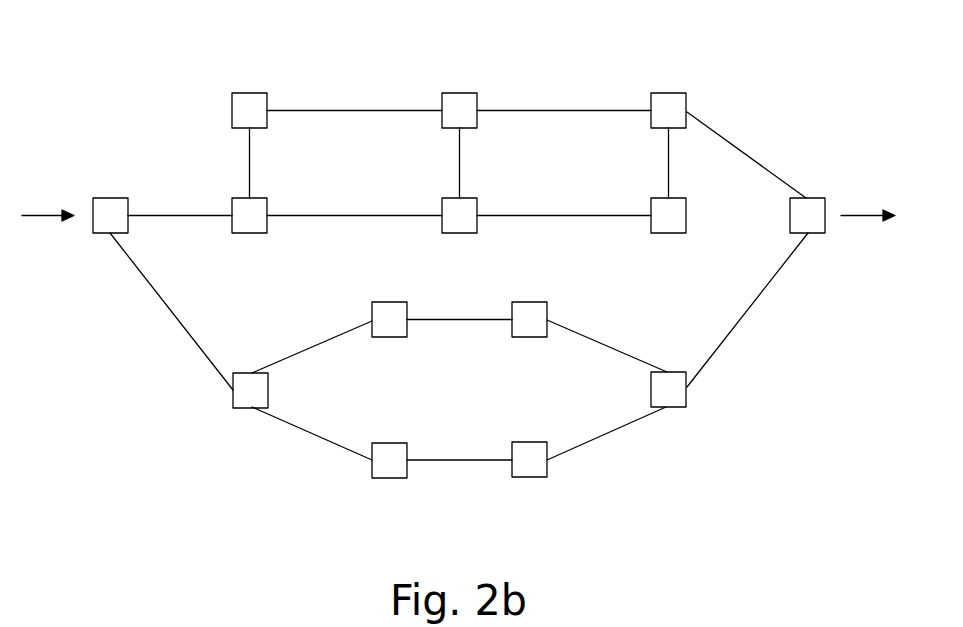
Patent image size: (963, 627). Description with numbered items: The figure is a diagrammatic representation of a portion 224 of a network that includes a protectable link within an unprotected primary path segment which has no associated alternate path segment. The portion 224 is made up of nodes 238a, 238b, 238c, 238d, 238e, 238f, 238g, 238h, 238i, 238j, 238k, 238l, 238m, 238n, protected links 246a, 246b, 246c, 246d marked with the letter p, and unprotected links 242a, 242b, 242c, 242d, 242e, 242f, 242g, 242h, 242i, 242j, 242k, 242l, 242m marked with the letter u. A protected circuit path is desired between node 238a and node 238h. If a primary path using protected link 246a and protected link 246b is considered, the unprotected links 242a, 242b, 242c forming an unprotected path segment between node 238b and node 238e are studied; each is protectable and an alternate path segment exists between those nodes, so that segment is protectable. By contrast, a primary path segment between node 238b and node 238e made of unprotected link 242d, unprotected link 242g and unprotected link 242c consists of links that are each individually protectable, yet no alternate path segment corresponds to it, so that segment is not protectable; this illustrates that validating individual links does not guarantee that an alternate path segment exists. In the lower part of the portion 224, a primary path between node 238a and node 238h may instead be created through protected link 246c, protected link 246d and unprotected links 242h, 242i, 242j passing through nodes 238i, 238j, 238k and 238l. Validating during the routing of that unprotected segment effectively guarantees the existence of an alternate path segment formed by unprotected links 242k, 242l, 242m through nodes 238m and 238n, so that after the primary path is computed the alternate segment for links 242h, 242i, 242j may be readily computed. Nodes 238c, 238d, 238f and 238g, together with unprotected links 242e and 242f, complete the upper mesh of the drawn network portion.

The portion of a network 224 is at (172, 28).
The node 238a is at (108, 198).
The node 238b is at (248, 233).
The node 238c is at (247, 93).
The node 238d is at (455, 93).
The node 238e is at (665, 93).
The node 238f is at (458, 233).
The node 238g is at (668, 233).
The node 238h is at (815, 198).
The node 238i is at (238, 373).
The node 238j is at (383, 337).
The node 238k is at (547, 311).
The node 238l is at (667, 407).
The node 238m is at (387, 443).
The node 238n is at (527, 442).
The unprotected link 242a is at (250, 194).
The unprotected link 242b is at (397, 111).
The unprotected link 242c is at (597, 111).
The unprotected link 242d is at (395, 216).
The unprotected link 242e is at (596, 216).
The unprotected link 242f is at (669, 196).
The unprotected link 242g is at (460, 195).
The unprotected link 242h is at (328, 339).
The unprotected link 242i is at (477, 323).
The unprotected link 242j is at (615, 352).
The unprotected link 242k is at (338, 447).
The unprotected link 242l is at (477, 462).
The unprotected link 242m is at (597, 445).
The protected link 246a is at (152, 217).
The protected link 246b is at (713, 129).
The protected link 246c is at (167, 303).
The protected link 246d is at (768, 289).